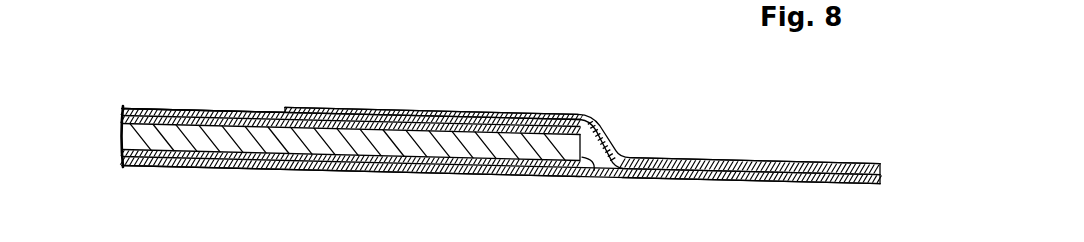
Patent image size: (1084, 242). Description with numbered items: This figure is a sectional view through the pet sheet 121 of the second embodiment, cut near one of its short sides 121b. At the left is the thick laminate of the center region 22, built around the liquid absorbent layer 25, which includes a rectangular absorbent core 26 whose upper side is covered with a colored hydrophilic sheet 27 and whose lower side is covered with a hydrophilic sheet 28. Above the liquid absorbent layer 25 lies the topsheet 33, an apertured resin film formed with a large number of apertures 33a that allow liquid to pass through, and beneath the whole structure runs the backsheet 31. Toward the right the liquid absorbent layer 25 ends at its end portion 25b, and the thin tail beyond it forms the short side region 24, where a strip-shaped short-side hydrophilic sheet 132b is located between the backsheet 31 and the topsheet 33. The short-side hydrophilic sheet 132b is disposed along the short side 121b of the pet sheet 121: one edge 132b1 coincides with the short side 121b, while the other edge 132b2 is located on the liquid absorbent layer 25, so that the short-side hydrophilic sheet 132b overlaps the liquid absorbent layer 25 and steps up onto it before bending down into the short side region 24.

The center region 22 is at (236, 95).
The short side regions 24 is at (728, 148).
The liquid absorbent layer 25 is at (115, 118).
The end portion of core layer stack 25b is at (590, 178).
The absorbent core 26 is at (234, 143).
The colored hydrophilic sheet 27 is at (259, 110).
The hydrophilic sheet 28 is at (313, 170).
The backsheet 31 is at (666, 180).
The topsheet 33 is at (218, 118).
The apertures 33a is at (173, 112).
The pet sheet 121 is at (585, 71).
The short sides 121b is at (881, 180).
The short-side hydrophilic sheets 132b is at (602, 133).
The one edge 132b1 is at (881, 168).
The another edge 132b2 is at (284, 108).